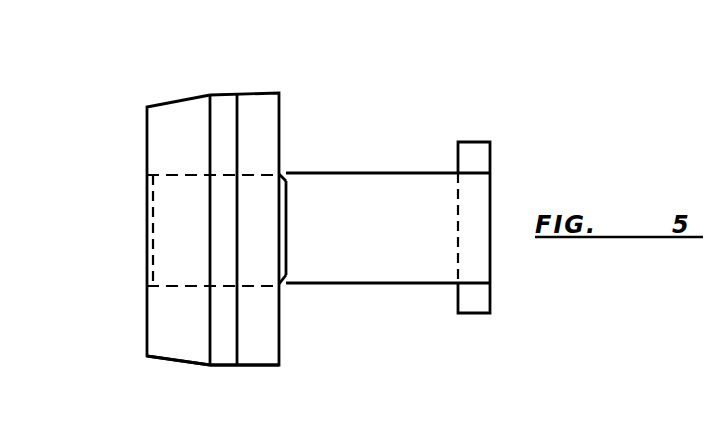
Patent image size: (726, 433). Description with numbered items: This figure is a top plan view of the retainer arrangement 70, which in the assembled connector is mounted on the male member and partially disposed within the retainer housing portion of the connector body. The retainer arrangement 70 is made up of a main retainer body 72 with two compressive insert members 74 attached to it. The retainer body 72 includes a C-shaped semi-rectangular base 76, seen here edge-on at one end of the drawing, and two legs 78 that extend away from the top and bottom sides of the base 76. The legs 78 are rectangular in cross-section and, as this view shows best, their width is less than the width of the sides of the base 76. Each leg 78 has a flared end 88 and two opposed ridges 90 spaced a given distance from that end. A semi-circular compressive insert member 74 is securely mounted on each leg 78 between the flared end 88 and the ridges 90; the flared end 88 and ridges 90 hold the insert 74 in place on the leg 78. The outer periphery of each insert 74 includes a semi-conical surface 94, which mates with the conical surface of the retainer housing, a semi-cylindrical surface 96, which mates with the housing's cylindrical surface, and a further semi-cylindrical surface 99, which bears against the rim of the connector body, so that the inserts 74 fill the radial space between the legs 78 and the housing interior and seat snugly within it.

The retainer arrangement 70 is at (368, 113).
The main retainer body 72 is at (425, 292).
The compressive insert member 74 is at (170, 118).
The base 76 is at (478, 160).
The leg 78 is at (395, 192).
The flared end 88 is at (148, 285).
The ridge 90 is at (285, 172).
The semi-conical surface 94 is at (177, 347).
The semi-cylindrical surface 96 is at (222, 105).
The semi-cylindrical surface 99 is at (262, 349).